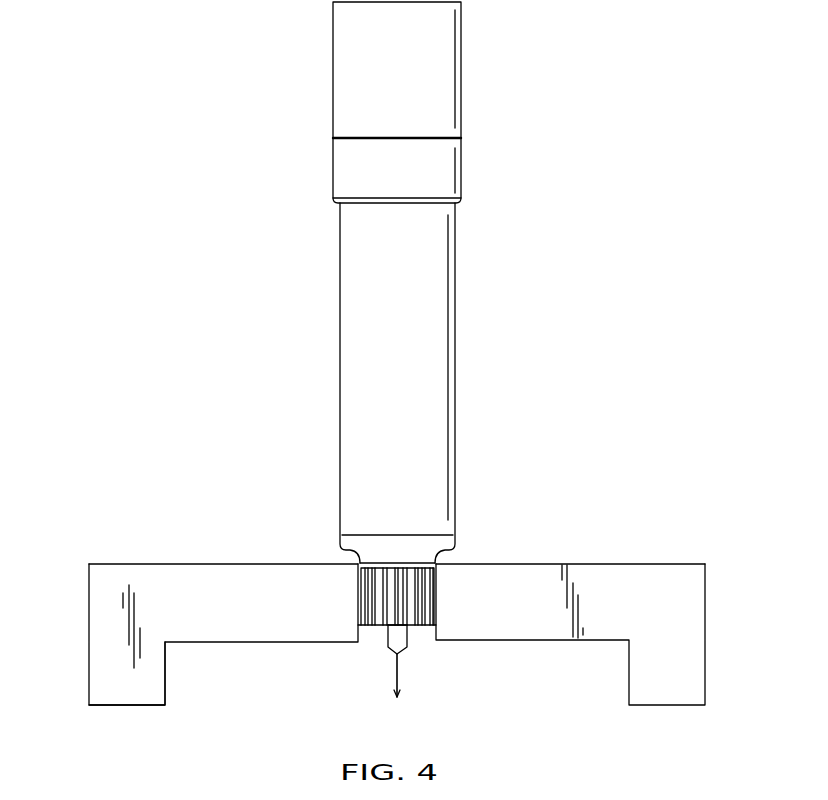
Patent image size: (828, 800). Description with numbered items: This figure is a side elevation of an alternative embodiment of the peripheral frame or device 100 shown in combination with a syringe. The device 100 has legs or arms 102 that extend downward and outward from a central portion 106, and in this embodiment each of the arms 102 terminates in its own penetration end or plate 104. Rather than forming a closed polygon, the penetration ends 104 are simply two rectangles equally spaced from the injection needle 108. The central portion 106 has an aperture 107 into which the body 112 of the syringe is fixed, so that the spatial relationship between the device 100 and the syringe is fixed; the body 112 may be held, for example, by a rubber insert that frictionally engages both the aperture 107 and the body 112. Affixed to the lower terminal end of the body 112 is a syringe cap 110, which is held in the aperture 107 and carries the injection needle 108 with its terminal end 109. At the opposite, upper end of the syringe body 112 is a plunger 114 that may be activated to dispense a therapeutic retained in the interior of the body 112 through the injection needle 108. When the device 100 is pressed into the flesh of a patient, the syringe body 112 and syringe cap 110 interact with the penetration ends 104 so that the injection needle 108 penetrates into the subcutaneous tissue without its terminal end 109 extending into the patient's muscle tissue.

The peripheral frame or device 100 is at (650, 322).
The arm 102 is at (89, 652).
The penetration end or plate 104 is at (100, 706).
The central portion 106 is at (180, 563).
The aperture 107 is at (427, 640).
The injection needle 108 is at (400, 681).
The terminal end 109 is at (397, 694).
The syringe cap 110 is at (424, 593).
The syringe body 112 is at (455, 373).
The plunger 114 is at (461, 70).